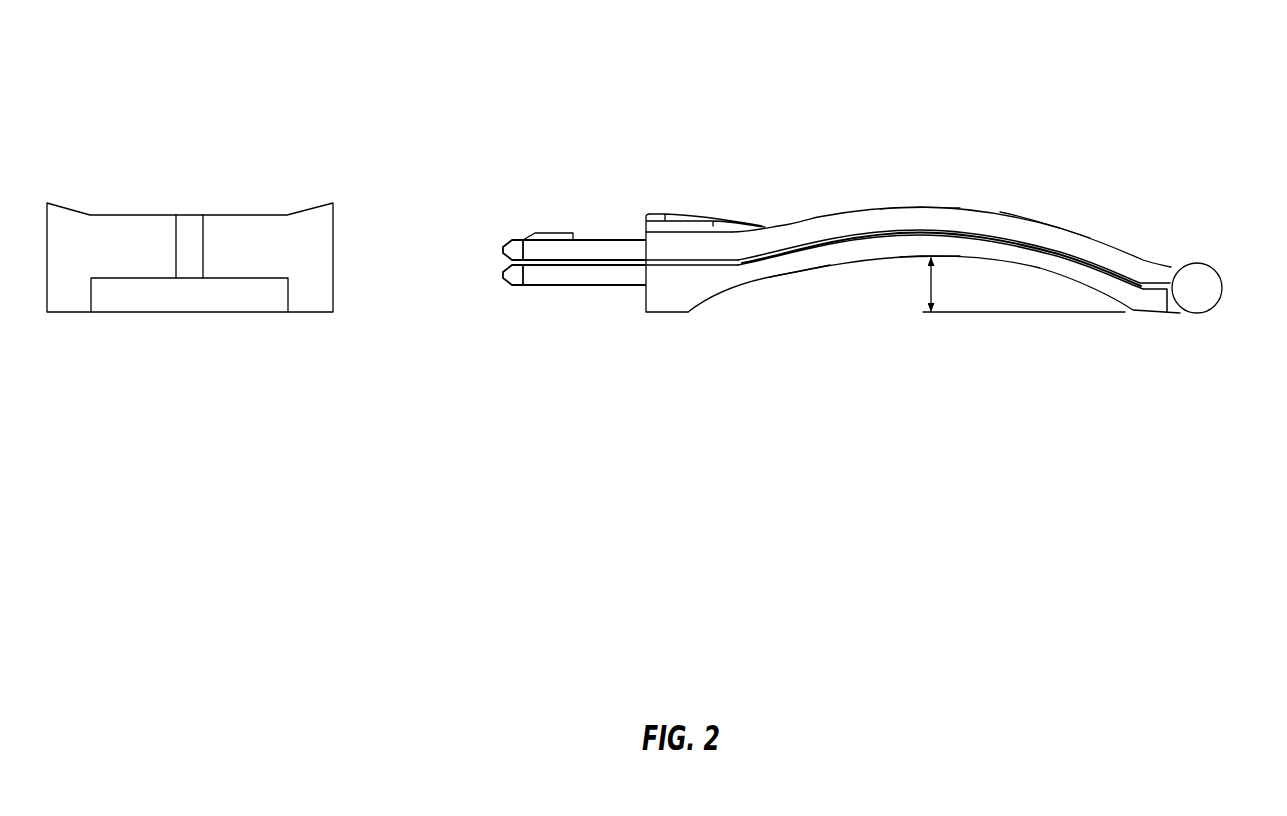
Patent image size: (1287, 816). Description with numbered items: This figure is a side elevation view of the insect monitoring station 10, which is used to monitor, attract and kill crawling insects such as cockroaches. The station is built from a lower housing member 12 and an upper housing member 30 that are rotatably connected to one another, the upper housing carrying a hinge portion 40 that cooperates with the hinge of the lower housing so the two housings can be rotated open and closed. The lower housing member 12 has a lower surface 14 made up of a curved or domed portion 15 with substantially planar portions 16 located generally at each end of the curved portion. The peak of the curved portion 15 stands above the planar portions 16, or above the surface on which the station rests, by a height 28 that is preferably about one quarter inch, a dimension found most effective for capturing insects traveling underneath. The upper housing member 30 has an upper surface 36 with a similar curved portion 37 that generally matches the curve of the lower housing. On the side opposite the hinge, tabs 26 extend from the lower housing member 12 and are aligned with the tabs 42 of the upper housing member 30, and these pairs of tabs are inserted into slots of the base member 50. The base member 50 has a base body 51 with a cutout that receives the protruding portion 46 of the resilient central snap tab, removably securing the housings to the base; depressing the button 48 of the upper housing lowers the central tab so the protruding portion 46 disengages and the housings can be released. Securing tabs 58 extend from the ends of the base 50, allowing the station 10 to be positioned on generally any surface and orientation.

The insect monitoring station 10 is at (944, 47).
The lower housing member 12 is at (768, 283).
The lower surface 14 is at (920, 258).
The curved portion 15 is at (793, 277).
The planar portion 16 is at (663, 312).
The tabs 26 is at (588, 287).
The height 28 is at (936, 283).
The upper housing member 30 is at (818, 215).
The upper surface 36 is at (915, 208).
The curved portion 37 is at (1005, 213).
The hinge portion 40 is at (1212, 283).
The tabs 42 is at (602, 238).
The protruding portion 46 is at (553, 231).
The button 48 is at (663, 217).
The base member 50 is at (186, 211).
The base body 51 is at (223, 235).
The securing tabs 58 is at (192, 302).